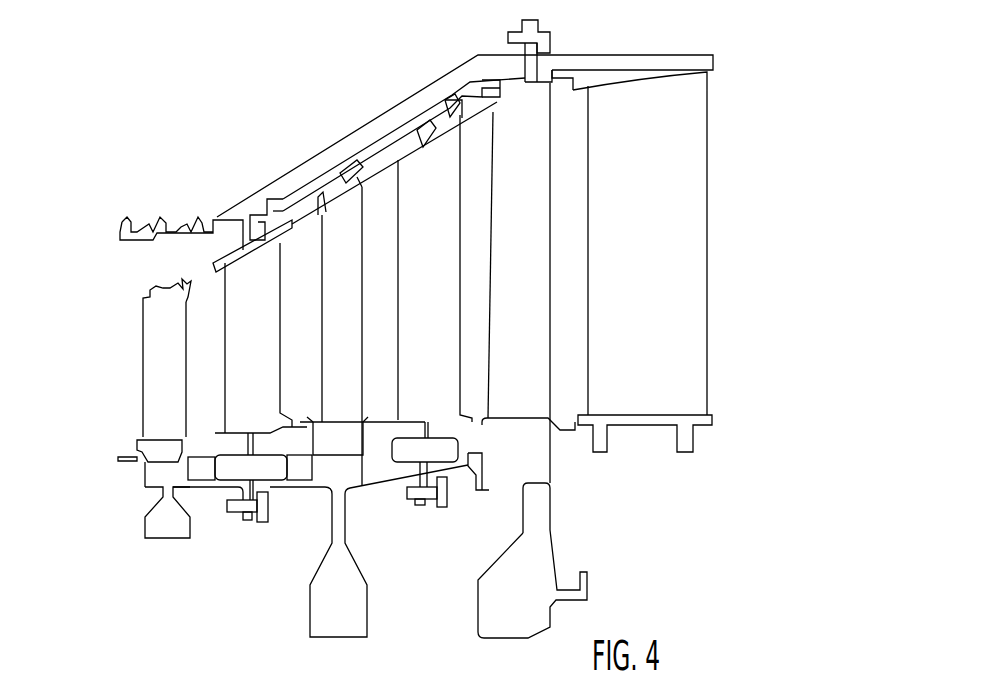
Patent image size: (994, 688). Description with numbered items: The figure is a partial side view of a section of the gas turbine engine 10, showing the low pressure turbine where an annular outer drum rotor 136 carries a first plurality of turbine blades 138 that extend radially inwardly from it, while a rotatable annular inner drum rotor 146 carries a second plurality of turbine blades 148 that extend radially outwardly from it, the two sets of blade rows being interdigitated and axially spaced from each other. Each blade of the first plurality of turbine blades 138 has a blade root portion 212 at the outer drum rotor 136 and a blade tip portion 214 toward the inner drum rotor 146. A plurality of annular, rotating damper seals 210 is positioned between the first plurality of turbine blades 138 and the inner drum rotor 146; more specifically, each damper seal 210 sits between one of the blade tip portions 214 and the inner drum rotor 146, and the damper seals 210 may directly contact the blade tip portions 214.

The gas turbine engine 10 is at (126, 105).
The annular outer drum rotor 136 is at (433, 79).
The blade root portion 212 is at (383, 115).
The first plurality of turbine blades 138 is at (231, 323).
The second plurality of turbine blades 148 is at (517, 301).
The annular inner drum rotor 146 is at (552, 490).
The blade tip portion 214 is at (423, 435).
The damper seal 210 is at (227, 470).